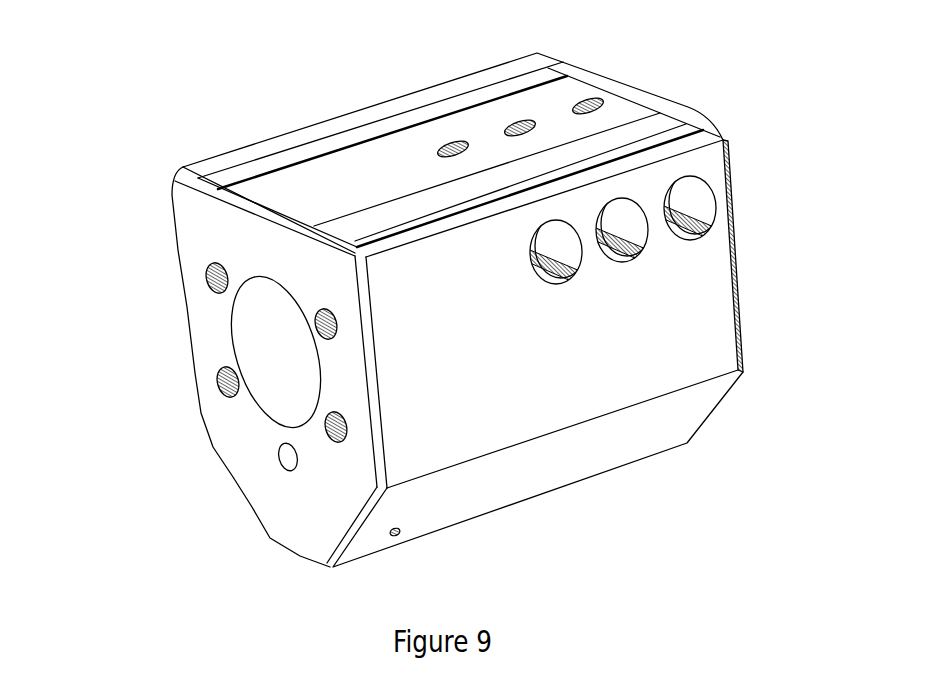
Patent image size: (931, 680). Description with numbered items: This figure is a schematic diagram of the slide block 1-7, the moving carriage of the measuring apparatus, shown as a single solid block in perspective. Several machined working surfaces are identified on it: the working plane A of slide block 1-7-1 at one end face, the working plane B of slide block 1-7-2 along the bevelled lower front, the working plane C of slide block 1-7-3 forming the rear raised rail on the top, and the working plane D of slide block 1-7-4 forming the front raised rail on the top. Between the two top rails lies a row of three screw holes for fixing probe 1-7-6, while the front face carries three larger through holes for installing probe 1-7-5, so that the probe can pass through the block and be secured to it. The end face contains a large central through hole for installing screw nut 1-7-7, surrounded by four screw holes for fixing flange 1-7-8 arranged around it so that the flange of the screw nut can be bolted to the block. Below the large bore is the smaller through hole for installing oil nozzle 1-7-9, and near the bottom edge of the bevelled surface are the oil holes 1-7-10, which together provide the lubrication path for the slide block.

The slide block 1-7 is at (436, 291).
The working plane A of slide block 1-7-1 is at (233, 477).
The working plane B of slide block 1-7-2 is at (633, 422).
The working plane C of slide block 1-7-3 is at (353, 117).
The working plane D of slide block 1-7-4 is at (556, 157).
The through holes for installing probe 1-7-5 is at (622, 225).
The screw holes for fixing probe 1-7-6 is at (453, 149).
The through hole for installing screw nut 1-7-7 is at (255, 342).
The screw holes for fixing flange 1-7-8 is at (217, 271).
The through hole for installing oil nozzle 1-7-9 is at (285, 462).
The oil holes 1-7-10 is at (396, 533).